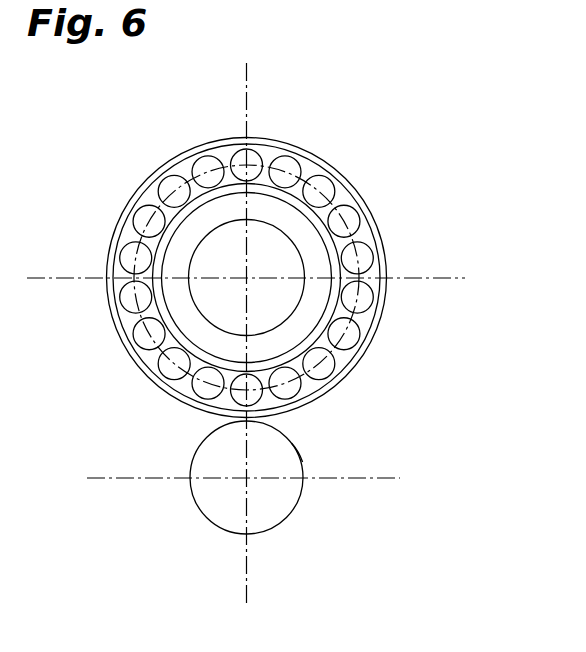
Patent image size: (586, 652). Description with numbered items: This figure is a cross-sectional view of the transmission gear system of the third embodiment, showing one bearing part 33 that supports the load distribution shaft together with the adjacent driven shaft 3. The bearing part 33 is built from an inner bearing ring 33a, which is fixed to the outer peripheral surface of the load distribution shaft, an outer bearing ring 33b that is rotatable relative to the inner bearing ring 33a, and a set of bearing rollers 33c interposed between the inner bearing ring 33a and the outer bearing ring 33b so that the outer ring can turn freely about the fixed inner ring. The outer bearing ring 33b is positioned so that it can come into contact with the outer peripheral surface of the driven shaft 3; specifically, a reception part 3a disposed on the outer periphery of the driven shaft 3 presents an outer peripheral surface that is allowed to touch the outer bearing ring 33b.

The bearing part 33 is at (307, 251).
The inner bearing ring 33a is at (337, 248).
The outer bearing ring 33b is at (340, 170).
The bearing roller 33c is at (330, 322).
The driven shaft 3 is at (299, 481).
The reception part 3a is at (291, 443).